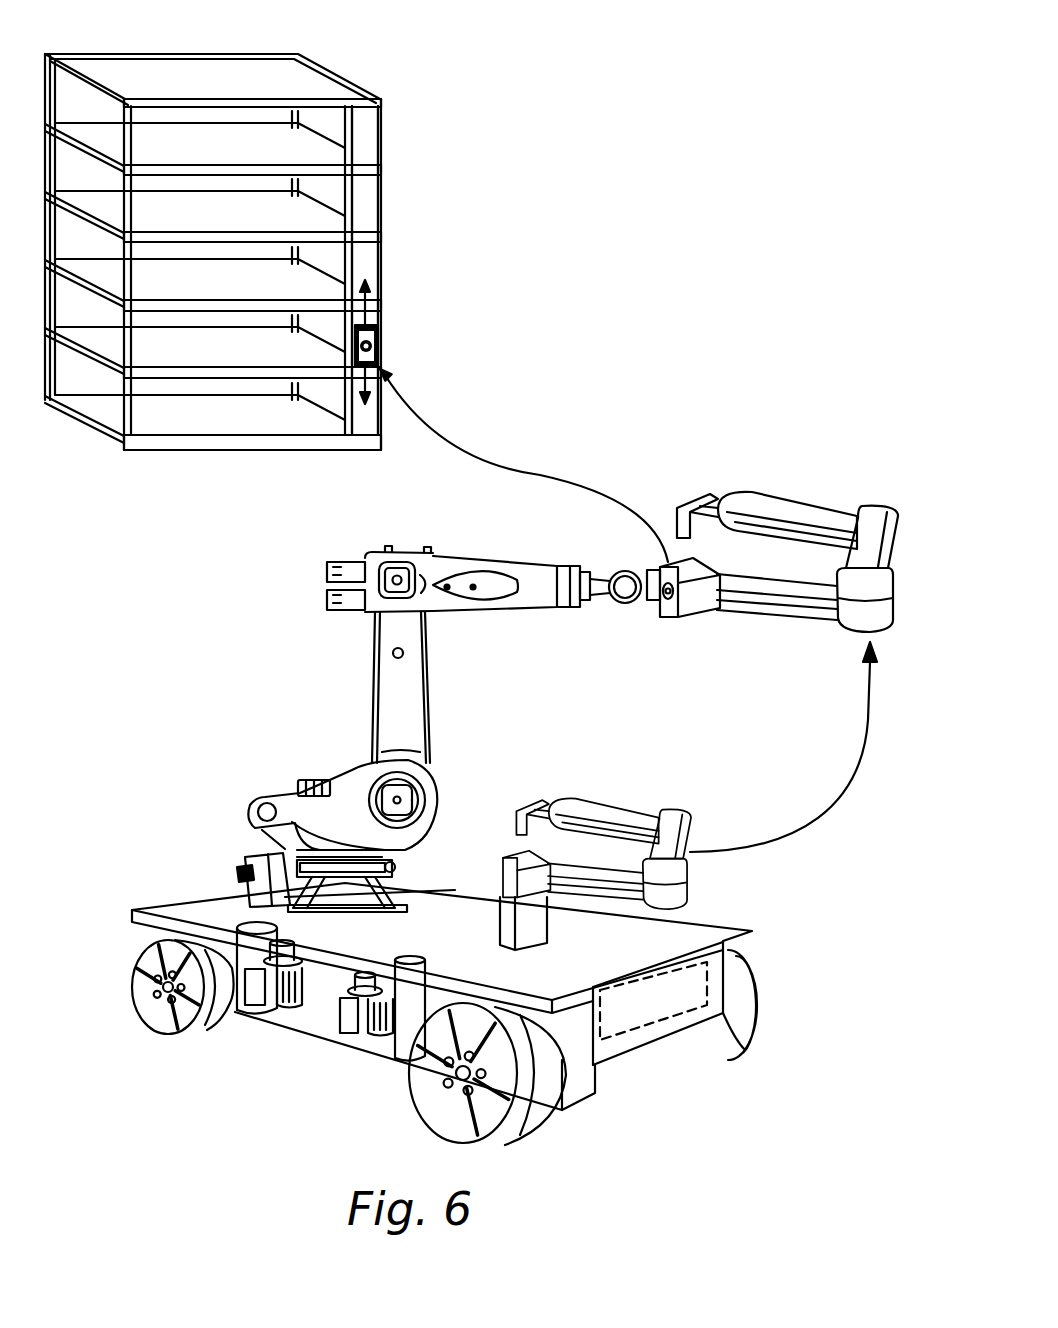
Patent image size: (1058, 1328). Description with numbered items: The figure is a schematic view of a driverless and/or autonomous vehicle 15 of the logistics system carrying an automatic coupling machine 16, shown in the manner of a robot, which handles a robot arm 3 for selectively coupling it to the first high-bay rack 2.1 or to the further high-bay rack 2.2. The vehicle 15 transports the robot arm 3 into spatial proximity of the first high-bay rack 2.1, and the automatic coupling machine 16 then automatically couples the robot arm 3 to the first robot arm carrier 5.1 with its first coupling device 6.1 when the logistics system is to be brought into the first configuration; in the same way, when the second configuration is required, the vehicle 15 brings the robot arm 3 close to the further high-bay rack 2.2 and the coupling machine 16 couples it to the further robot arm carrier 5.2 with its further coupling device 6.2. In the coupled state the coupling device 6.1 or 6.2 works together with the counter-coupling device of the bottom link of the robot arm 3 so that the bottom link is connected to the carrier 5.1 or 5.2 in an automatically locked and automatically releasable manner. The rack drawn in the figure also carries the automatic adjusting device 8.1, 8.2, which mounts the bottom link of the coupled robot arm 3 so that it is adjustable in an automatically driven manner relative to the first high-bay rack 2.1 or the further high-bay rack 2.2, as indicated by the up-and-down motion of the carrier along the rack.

The first high-bay rack 2.1 is at (315, 232).
The further high-bay rack 2.2 is at (344, 93).
The automatic adjusting device 8.1 is at (452, 270).
The automatic adjusting device 8.2 is at (367, 145).
The first coupling device 6.1 is at (491, 342).
The further coupling device 6.2 is at (379, 342).
The first robot arm carrier 5.1 is at (491, 342).
The further robot arm carrier 5.2 is at (491, 342).
The robot arm 3 is at (878, 518).
The automatic coupling machine 16 is at (395, 695).
The driverless and/or autonomous vehicle 15 is at (670, 947).